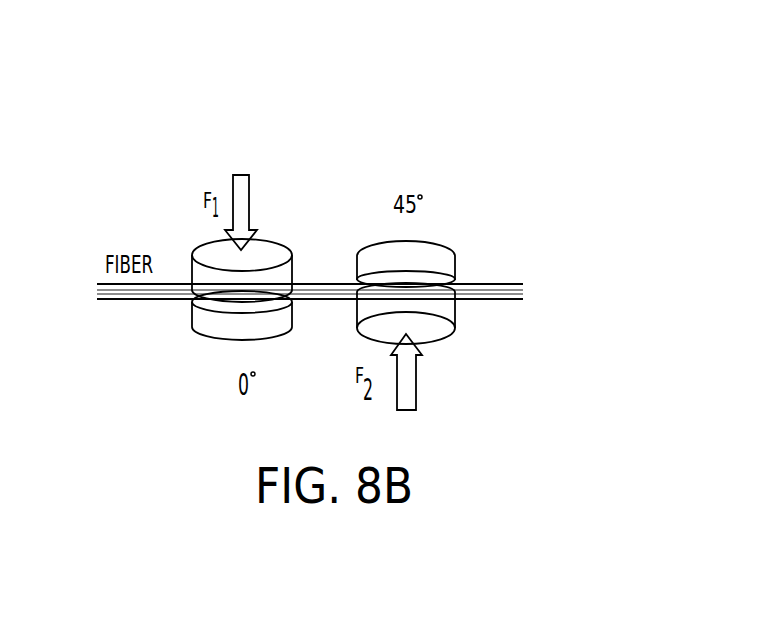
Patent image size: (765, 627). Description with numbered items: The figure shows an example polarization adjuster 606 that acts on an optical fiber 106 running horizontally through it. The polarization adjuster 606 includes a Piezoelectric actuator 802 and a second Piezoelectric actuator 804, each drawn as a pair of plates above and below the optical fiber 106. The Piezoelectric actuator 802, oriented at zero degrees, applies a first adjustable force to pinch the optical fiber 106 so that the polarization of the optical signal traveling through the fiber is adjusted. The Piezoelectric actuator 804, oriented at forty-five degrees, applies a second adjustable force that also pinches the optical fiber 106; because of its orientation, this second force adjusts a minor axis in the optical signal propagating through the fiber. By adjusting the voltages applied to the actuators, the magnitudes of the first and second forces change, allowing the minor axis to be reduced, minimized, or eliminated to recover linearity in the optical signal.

The polarization adjuster 606 is at (347, 49).
The Piezoelectric actuator 802 is at (281, 240).
The Piezoelectric actuator 804 is at (430, 234).
The optical fiber 106 is at (508, 284).